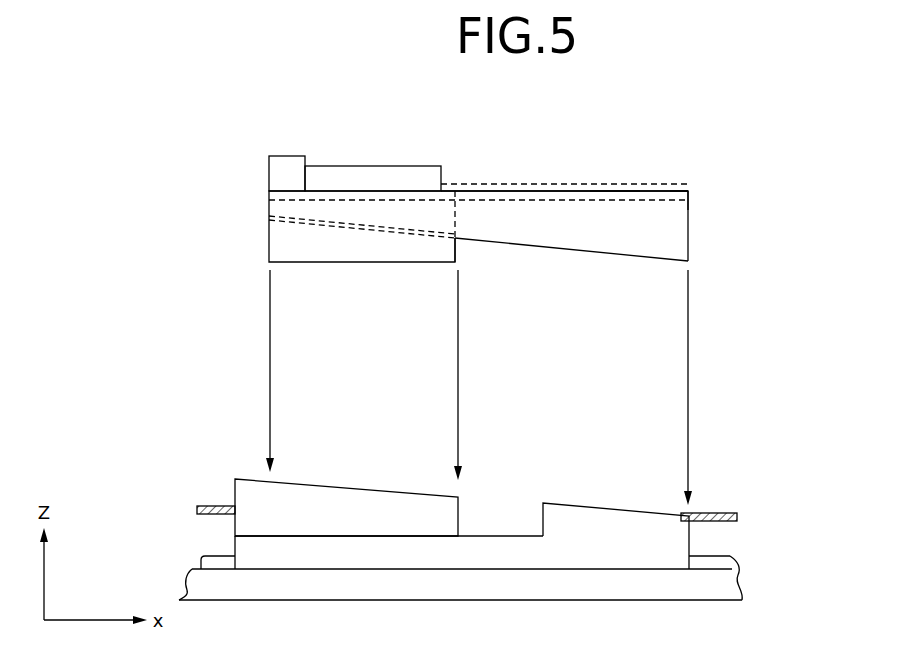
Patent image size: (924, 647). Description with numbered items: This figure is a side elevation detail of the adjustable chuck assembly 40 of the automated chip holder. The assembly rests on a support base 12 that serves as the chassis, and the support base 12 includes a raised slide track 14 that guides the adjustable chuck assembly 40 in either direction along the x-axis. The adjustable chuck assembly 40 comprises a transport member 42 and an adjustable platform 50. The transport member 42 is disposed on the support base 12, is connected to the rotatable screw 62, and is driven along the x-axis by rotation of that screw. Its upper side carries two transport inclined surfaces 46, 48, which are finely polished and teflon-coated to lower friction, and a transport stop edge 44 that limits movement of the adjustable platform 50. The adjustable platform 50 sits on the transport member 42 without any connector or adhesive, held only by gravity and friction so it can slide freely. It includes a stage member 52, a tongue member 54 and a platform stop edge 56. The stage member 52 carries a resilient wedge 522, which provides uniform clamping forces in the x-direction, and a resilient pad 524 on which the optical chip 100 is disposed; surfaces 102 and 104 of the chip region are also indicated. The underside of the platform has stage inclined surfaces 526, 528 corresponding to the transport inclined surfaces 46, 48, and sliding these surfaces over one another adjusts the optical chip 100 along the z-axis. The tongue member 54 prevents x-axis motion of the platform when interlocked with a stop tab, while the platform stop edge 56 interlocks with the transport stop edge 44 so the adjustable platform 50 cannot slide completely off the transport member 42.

The support base 12 is at (650, 583).
The slide track 14 is at (715, 564).
The adjustable chuck assembly 40 is at (684, 85).
The transport member 42 is at (538, 555).
The transport stop edge 44 is at (541, 524).
The transport inclined surface 46 is at (620, 510).
The transport inclined surface 48 is at (335, 485).
The adjustable platform 50 is at (620, 223).
The stage member 52 is at (503, 190).
The tongue member 54 is at (283, 170).
The platform stop edge 56 is at (458, 248).
The rotatable screw 62 is at (700, 512).
The optical chip 100 is at (477, 184).
The edge 102 is at (688, 191).
The surface 104 is at (608, 186).
The resilient wedge 522 is at (372, 180).
The resilient pad 524 is at (565, 200).
The stage inclined surface 526 is at (612, 253).
The stage inclined surface 528 is at (347, 228).